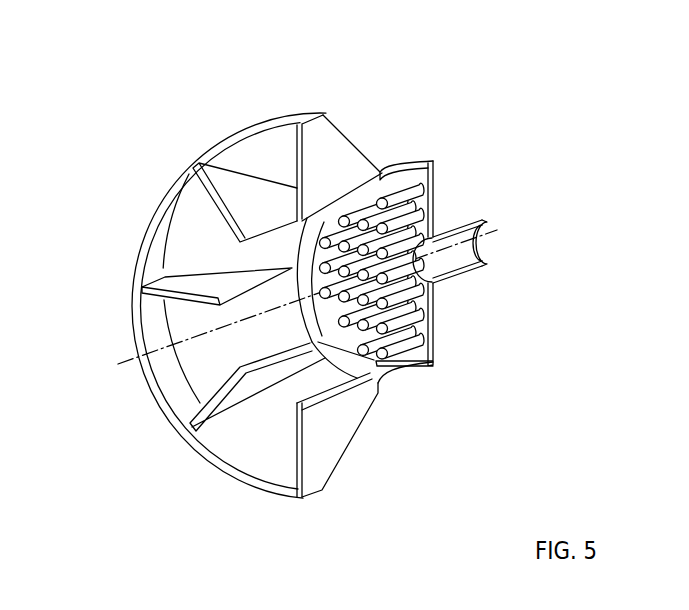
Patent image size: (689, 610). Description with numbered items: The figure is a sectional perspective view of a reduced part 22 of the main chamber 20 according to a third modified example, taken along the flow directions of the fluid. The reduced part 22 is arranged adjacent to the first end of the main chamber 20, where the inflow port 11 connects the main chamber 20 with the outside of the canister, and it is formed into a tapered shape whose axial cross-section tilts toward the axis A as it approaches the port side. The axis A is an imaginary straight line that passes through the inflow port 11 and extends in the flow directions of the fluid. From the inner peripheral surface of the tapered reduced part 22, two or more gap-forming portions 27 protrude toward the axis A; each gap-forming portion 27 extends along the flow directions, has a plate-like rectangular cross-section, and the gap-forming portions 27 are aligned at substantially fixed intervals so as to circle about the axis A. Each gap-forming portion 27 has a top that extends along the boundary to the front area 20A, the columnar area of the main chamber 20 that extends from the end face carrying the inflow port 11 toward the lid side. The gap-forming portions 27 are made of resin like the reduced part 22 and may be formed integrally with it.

The inflow port 11 is at (467, 222).
The main chamber 20 is at (184, 334).
The front area 20A is at (373, 358).
The reduced part 22 is at (183, 247).
The gap-forming portion 27 is at (230, 397).
The axis A is at (503, 232).